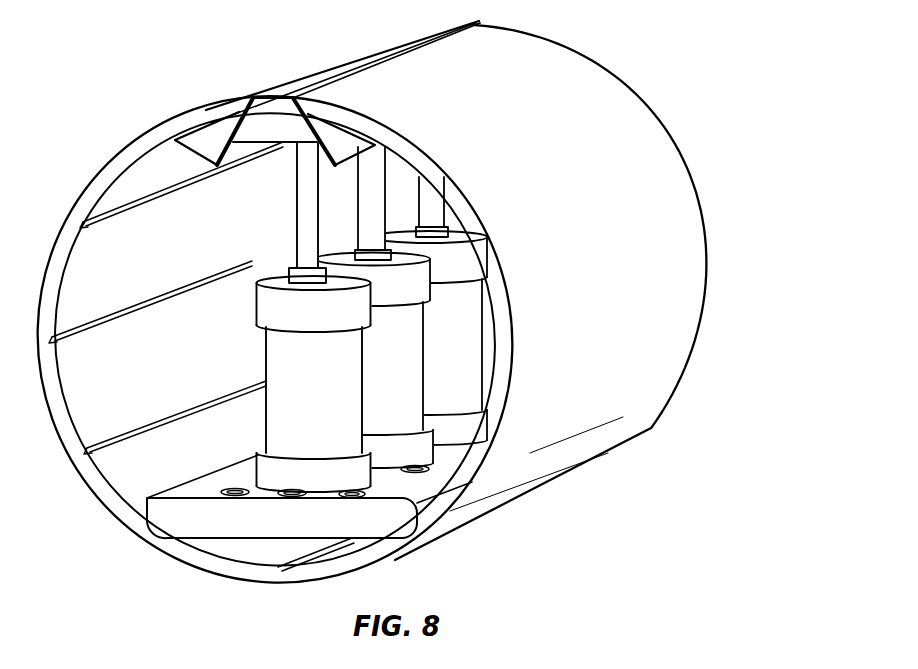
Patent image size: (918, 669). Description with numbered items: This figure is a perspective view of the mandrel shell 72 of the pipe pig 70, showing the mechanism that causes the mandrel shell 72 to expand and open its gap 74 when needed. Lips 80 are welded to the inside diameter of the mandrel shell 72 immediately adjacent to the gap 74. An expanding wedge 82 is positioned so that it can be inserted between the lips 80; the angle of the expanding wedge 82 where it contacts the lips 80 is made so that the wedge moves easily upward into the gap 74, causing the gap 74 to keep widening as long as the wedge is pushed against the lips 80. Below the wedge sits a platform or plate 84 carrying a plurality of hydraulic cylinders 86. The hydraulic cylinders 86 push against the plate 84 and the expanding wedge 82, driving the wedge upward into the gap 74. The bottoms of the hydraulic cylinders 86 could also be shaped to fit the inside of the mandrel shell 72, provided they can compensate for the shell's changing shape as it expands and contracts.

The pipe pig 70 is at (681, 246).
The mandrel shell 72 is at (108, 178).
The gap 74 is at (326, 94).
The lips 80 is at (207, 145).
The expanding wedge 82 is at (262, 97).
The plate 84 is at (203, 522).
The hydraulic cylinders 86 is at (330, 440).